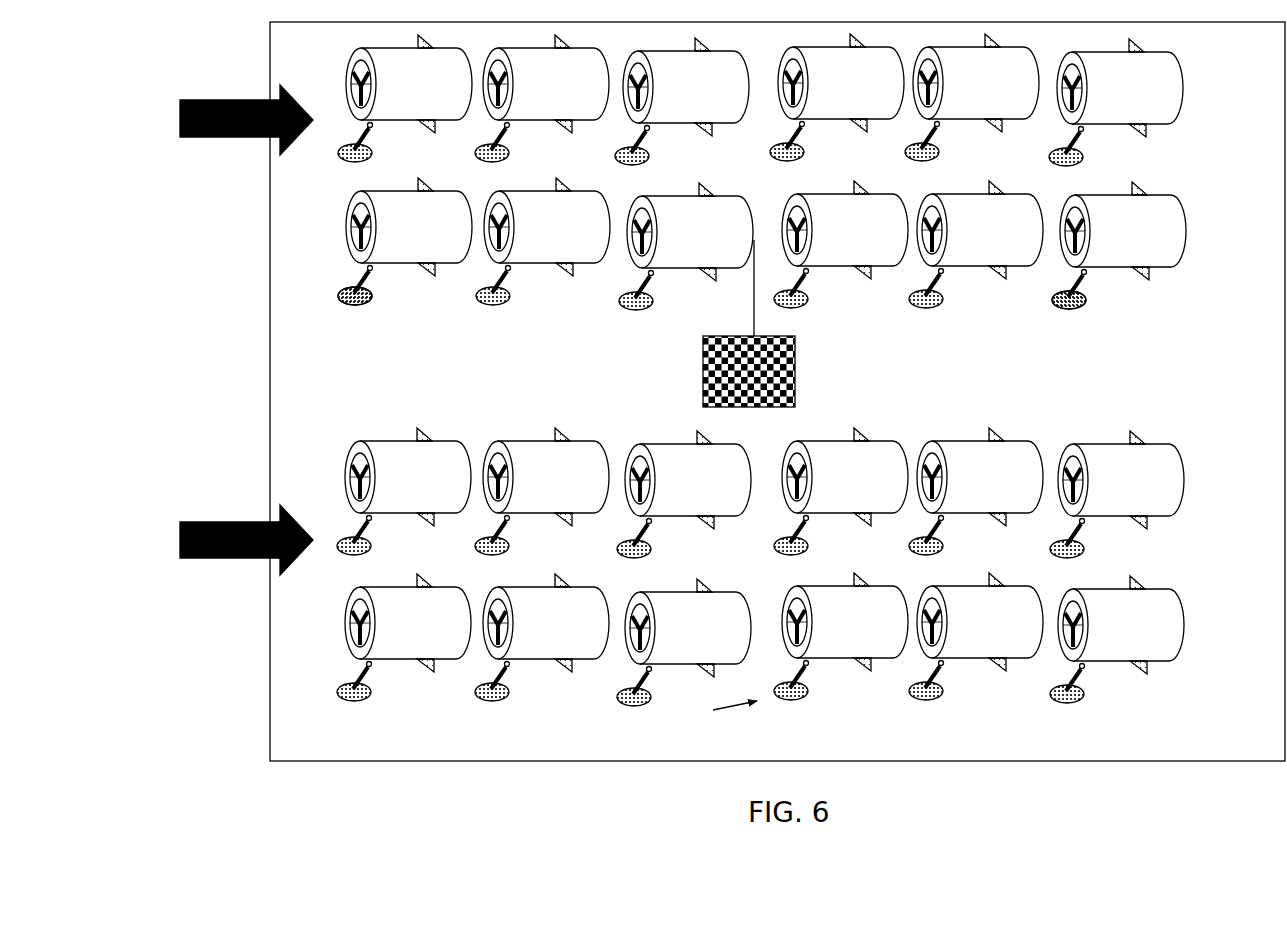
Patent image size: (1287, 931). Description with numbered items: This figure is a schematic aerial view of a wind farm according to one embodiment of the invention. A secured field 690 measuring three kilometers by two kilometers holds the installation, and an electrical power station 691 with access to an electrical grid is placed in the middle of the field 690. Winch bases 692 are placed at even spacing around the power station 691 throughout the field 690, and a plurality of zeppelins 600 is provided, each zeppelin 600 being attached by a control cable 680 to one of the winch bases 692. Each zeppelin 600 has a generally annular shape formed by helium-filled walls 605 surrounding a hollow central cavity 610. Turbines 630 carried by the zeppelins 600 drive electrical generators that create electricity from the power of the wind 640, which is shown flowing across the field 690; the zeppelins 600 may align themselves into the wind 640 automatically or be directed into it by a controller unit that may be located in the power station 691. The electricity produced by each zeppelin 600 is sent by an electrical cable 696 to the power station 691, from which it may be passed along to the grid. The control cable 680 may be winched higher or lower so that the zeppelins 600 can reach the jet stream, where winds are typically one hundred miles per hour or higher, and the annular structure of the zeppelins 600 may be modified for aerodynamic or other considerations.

The zeppelin 600 is at (1180, 125).
The helium-filled walls 605 is at (357, 196).
The hollow central cavity 610 is at (360, 467).
The turbine 630 is at (360, 626).
The wind 640 is at (232, 145).
The control cable 680 is at (1090, 286).
The field 690 is at (308, 740).
The electrical power station 691 is at (703, 377).
The winch base 692 is at (372, 306).
The electrical cable 696 is at (752, 308).